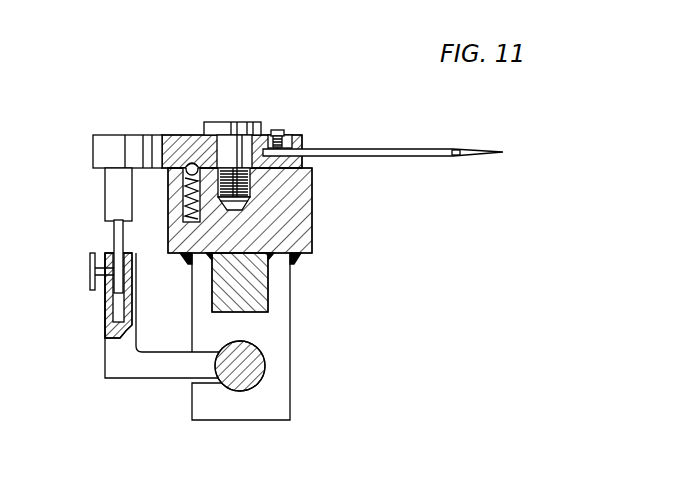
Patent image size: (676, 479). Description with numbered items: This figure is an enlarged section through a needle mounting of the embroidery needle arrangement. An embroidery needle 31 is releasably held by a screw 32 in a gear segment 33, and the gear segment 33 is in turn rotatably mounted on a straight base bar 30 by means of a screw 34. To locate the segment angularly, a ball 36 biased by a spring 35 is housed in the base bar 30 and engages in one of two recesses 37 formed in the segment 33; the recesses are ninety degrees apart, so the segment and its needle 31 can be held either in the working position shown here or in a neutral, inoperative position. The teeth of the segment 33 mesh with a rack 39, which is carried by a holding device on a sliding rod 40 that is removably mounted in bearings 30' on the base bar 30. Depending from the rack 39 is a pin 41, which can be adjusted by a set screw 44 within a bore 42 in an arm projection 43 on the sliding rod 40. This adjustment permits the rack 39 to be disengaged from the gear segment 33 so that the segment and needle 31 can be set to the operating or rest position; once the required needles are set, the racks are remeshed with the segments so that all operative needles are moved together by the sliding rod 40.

The base bar 30 is at (262, 240).
The bearing 30' is at (278, 336).
The embroidery needle 31 is at (378, 151).
The screw 32 is at (285, 131).
The gear segment 33 is at (173, 140).
The screw 34 is at (245, 124).
The spring 35 is at (180, 214).
The ball 36 is at (184, 171).
The recess 37 is at (190, 162).
The rack 39 is at (104, 142).
The sliding rod 40 is at (250, 354).
The pin 41 is at (112, 237).
The bore 42 is at (121, 303).
The arm projection 43 is at (153, 365).
The set screw 44 is at (90, 262).